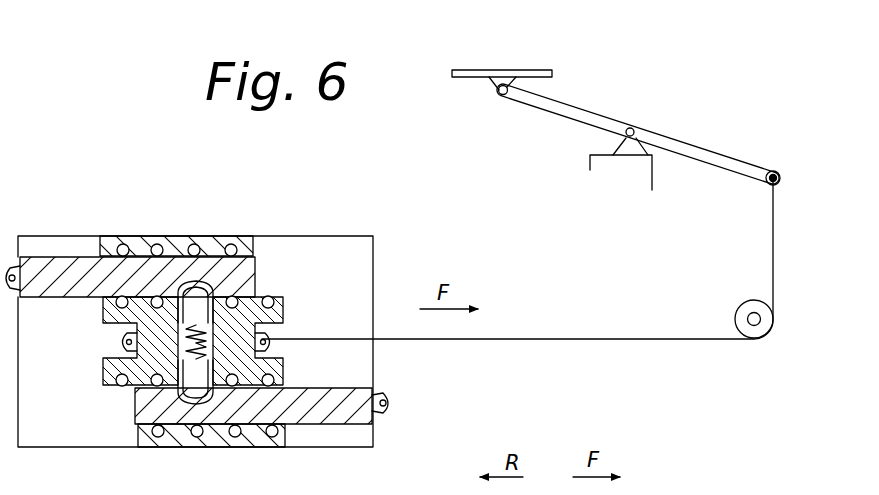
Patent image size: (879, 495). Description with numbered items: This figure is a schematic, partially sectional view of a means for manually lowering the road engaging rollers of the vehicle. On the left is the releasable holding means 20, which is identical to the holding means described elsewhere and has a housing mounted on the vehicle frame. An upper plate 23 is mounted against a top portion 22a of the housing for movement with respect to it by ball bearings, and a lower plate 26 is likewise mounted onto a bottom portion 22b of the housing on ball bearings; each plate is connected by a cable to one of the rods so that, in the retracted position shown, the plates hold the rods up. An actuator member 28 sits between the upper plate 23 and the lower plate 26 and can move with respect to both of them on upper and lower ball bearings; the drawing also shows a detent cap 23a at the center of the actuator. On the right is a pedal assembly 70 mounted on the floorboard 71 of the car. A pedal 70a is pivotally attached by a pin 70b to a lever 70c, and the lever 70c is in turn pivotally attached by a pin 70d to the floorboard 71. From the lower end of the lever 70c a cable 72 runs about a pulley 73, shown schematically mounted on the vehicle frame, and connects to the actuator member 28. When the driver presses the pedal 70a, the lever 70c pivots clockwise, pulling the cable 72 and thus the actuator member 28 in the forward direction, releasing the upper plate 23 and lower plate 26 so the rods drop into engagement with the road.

The releasable holding means 20 is at (93, 224).
The top portion of the housing 22a is at (177, 247).
The bottom portion of the housing 22b is at (182, 442).
The upper plate 23 is at (45, 262).
The detent cap 23a is at (214, 294).
The lower plate 26 is at (332, 415).
The actuator member 28 is at (287, 317).
The pedal assembly 70 is at (521, 64).
The pedal 70a is at (473, 70).
The pin 70b is at (497, 97).
The lever 70c is at (688, 142).
The pin 70d is at (631, 127).
The floorboard 71 is at (590, 150).
The cable 72 is at (775, 238).
The pulley 73 is at (741, 305).